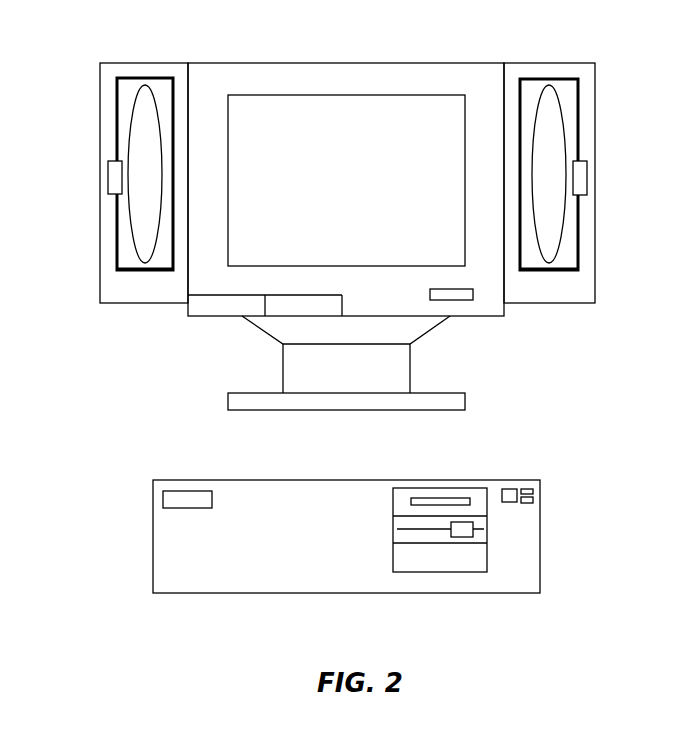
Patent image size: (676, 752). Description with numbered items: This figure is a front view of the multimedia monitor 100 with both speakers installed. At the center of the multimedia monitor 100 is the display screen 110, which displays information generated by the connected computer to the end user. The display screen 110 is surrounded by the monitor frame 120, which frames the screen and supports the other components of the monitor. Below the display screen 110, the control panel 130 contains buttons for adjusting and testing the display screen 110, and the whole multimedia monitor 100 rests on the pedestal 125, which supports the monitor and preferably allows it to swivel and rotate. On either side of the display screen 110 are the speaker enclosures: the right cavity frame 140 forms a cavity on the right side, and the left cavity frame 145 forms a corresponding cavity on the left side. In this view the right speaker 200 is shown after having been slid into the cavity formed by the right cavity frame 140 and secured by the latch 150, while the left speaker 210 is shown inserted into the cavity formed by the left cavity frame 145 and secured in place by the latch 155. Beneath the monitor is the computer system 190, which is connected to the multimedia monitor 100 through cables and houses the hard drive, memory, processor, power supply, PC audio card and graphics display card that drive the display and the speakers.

The multimedia monitor 100 is at (486, 349).
The display screen 110 is at (366, 191).
The monitor frame 120 is at (250, 63).
The pedestal 125 is at (253, 412).
The control panel 130 is at (207, 312).
The right cavity frame 140 is at (542, 79).
The left cavity frame 145 is at (140, 79).
The latch 150 is at (577, 183).
The latch 155 is at (113, 185).
The computer system 190 is at (540, 543).
The right speaker 200 is at (556, 268).
The left speaker 210 is at (131, 267).